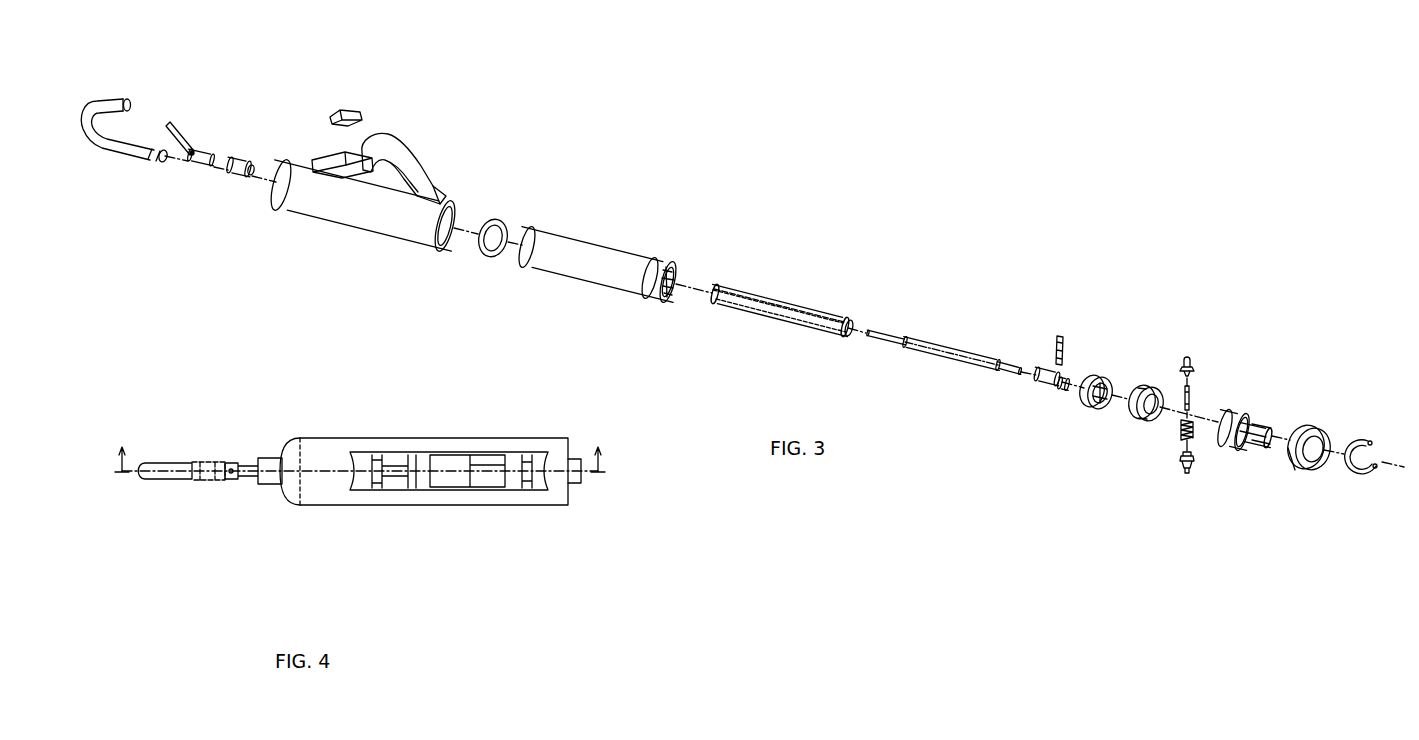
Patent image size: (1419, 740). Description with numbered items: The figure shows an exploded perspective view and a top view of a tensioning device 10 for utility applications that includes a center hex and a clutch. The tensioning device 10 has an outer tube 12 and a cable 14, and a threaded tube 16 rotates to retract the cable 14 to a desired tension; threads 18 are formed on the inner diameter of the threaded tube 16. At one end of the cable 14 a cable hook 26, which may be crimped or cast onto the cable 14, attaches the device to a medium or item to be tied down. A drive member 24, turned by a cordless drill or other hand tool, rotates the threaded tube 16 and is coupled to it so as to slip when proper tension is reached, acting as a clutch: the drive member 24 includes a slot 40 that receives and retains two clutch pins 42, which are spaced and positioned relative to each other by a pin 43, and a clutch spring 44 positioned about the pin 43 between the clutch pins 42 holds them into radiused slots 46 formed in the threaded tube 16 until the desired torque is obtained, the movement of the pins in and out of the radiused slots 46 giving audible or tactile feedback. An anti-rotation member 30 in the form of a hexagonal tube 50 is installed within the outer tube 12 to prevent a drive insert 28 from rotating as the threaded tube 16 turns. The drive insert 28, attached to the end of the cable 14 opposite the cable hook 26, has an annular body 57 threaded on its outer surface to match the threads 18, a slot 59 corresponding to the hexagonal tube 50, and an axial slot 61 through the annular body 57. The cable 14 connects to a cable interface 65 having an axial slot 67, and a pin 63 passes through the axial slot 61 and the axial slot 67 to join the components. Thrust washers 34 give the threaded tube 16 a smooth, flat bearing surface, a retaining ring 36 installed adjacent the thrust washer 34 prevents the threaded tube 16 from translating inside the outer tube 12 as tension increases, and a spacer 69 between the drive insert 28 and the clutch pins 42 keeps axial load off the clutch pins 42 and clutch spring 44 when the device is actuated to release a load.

In FIG. 3, the tensioning device 10 is at (868, 233).
In FIG. 3, the outer tube 12 is at (352, 228).
In FIG. 4, the outer tube 12 is at (368, 438).
In FIG. 3, the cable 14 is at (955, 362).
In FIG. 3, the threaded tube 16 is at (596, 285).
In FIG. 3, the threads 18 is at (685, 268).
In FIG. 3, the drive member 24 is at (1247, 412).
In FIG. 4, the drive member 24 is at (582, 480).
In FIG. 3, the cable hook 26 is at (122, 151).
In FIG. 4, the cable hook 26 is at (168, 462).
In FIG. 3, the drive insert 28 is at (1094, 406).
In FIG. 3, the anti-rotation member 30 is at (760, 292).
In FIG. 3, the thrust washer 34 is at (488, 262).
In FIG. 3, the retaining ring 36 is at (1362, 441).
In FIG. 3, the slot 40 is at (1230, 418).
In FIG. 3, the clutch pins 42 is at (1197, 357).
In FIG. 3, the pin 43 is at (1190, 400).
In FIG. 3, the clutch spring 44 is at (1182, 436).
In FIG. 3, the radiused slots 46 is at (674, 303).
In FIG. 3, the hexagonal tube 50 is at (773, 334).
In FIG. 3, the annular body 57 is at (1086, 385).
In FIG. 3, the slot 59 is at (1106, 408).
In FIG. 3, the axial slot 61 is at (1100, 380).
In FIG. 3, the pin 63 is at (1055, 331).
In FIG. 3, the cable interface 65 is at (1045, 393).
In FIG. 3, the axial slot 67 is at (1058, 391).
In FIG. 3, the spacer 69 is at (1138, 421).